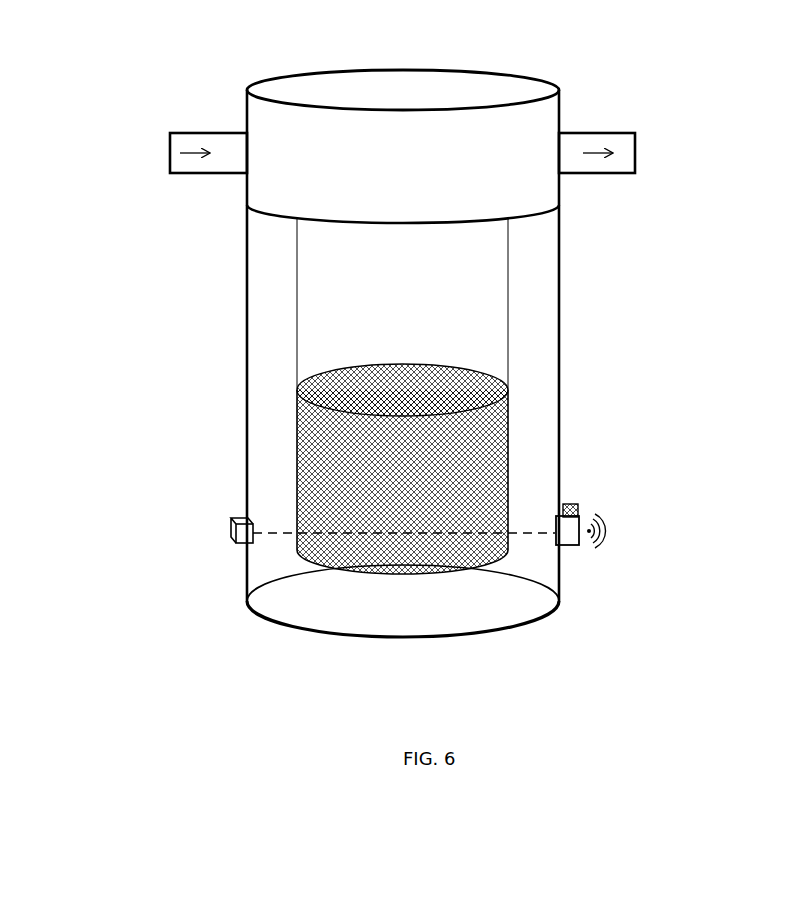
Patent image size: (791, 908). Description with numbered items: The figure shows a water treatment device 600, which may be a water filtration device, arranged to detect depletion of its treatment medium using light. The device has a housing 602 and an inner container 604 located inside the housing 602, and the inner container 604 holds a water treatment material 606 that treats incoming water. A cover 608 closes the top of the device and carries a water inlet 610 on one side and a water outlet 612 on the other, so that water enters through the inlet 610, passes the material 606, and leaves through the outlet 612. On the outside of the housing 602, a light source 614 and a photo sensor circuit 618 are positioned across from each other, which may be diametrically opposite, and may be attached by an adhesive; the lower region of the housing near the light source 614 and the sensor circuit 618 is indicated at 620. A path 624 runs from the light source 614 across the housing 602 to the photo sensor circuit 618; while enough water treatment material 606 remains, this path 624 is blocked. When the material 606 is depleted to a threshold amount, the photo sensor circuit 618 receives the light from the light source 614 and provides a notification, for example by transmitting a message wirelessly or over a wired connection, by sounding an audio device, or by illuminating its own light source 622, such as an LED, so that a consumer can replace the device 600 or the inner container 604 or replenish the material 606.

The water treatment device 600 is at (103, 50).
The housing 602 is at (246, 256).
The inner container 604 is at (296, 323).
The water treatment material 606 is at (466, 455).
The cover 608 is at (545, 116).
The water inlet 610 is at (185, 174).
The water outlet 612 is at (620, 174).
The light source 614 is at (231, 520).
The photo sensor circuit 618 is at (578, 546).
The container bottom 620 is at (297, 606).
The light source 622 is at (571, 509).
The path 624 is at (516, 534).